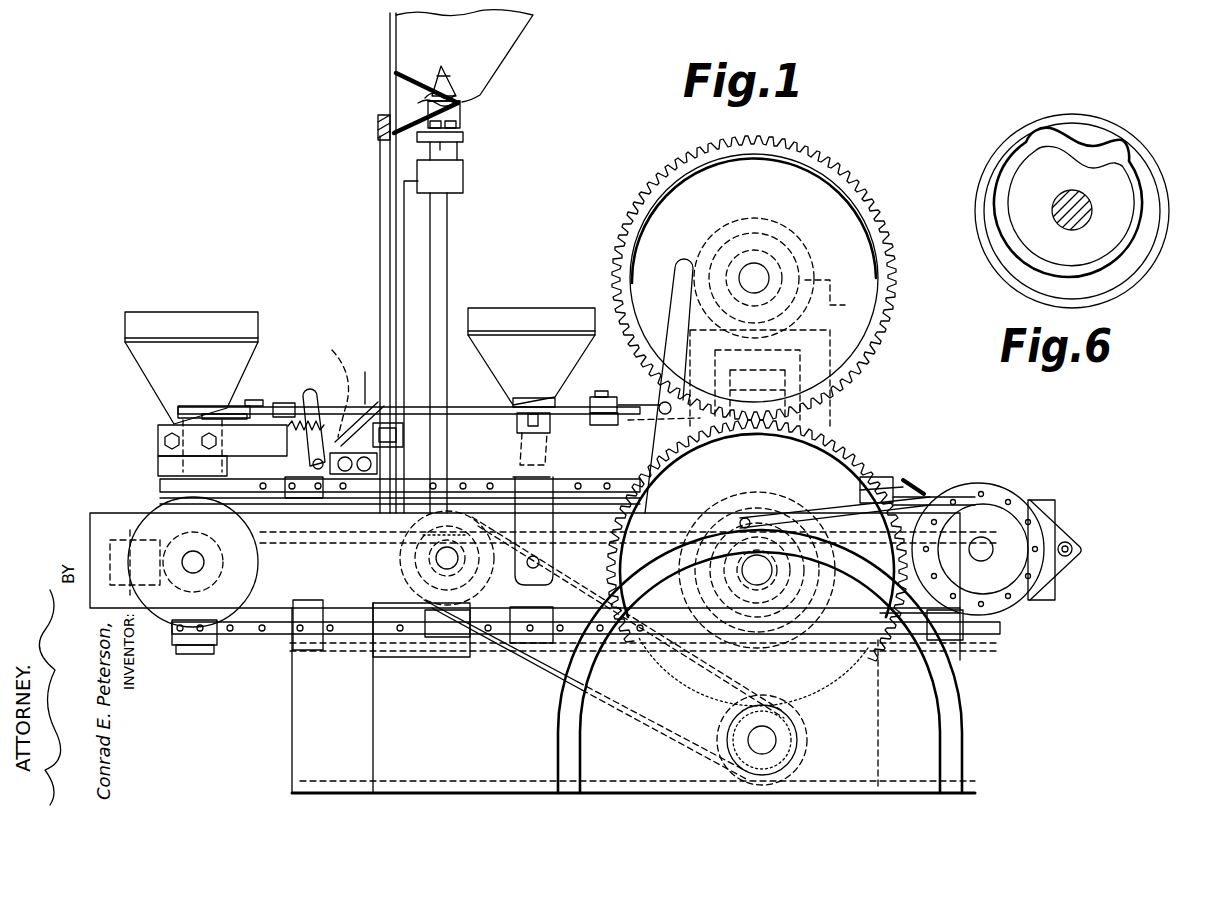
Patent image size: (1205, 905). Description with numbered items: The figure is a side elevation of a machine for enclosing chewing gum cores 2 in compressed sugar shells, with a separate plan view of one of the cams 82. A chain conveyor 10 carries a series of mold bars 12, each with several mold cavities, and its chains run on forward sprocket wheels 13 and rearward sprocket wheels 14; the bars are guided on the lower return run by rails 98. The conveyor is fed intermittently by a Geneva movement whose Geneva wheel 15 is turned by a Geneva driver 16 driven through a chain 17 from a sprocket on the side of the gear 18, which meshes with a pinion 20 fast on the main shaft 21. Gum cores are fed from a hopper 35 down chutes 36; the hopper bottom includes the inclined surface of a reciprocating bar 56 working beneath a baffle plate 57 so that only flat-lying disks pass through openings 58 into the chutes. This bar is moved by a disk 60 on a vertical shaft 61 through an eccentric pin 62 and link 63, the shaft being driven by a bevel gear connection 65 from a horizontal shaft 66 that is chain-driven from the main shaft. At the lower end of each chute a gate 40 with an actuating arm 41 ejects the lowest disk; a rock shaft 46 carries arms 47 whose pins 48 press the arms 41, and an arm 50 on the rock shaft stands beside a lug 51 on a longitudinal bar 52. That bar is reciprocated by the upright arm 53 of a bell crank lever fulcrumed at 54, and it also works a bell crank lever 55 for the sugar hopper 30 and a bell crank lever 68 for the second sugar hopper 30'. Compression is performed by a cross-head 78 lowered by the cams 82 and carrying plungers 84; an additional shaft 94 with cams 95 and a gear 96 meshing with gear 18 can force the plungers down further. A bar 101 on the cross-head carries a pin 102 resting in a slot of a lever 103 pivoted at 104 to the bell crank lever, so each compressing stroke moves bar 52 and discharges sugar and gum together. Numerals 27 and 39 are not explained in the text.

In FIG. 1, the chewing gum core 2 is at (444, 74).
In FIG. 1, the chain conveyor 10 is at (245, 640).
In FIG. 1, the mold bar 12 is at (183, 645).
In FIG. 1, the sprocket wheel 13 is at (862, 456).
In FIG. 1, the sprocket wheel 14 is at (260, 562).
In FIG. 1, the Geneva wheel 15 is at (912, 478).
In FIG. 1, the Geneva driver 16 is at (1056, 534).
In FIG. 1, the chain 17 is at (982, 488).
In FIG. 1, the gear 18 is at (838, 697).
In FIG. 1, the pinion 20 is at (800, 752).
In FIG. 1, the main shaft 21 is at (752, 739).
In FIG. 1, the shaft 27 is at (188, 558).
In FIG. 1, the sugar hopper 30 is at (177, 368).
In FIG. 1, the sugar hopper 30' is at (531, 342).
In FIG. 1, the hopper 35 is at (492, 57).
In FIG. 1, the chute 36 is at (382, 282).
In FIG. 1, the guide rail 39 is at (590, 479).
In FIG. 1, the gate 40 is at (403, 440).
In FIG. 1, the actuating arm 41 is at (329, 382).
In FIG. 1, the rock shaft 46 is at (310, 464).
In FIG. 1, the arm 47 is at (340, 425).
In FIG. 1, the pin 48 is at (365, 372).
In FIG. 1, the arm 50 is at (300, 420).
In FIG. 1, the block or lug 51 is at (283, 403).
In FIG. 1, the bar 52 is at (465, 407).
In FIG. 1, the upright arm of bell crank lever 53 is at (550, 458).
In FIG. 1, the fulcrum 54 is at (527, 620).
In FIG. 1, the bell crank lever 55 is at (208, 407).
In FIG. 1, the reciprocating bar 56 is at (462, 117).
In FIG. 1, the baffle plate 57 is at (410, 95).
In FIG. 1, the opening 58 is at (378, 127).
In FIG. 1, the disk 60 is at (464, 136).
In FIG. 1, the vertical shaft 61 is at (449, 216).
In FIG. 1, the eccentric pin 62 is at (464, 124).
In FIG. 1, the link 63 is at (430, 138).
In FIG. 1, the bevel gear connection 65 is at (398, 556).
In FIG. 1, the horizontal shaft 66 is at (440, 560).
In FIG. 1, the bell crank lever 68 is at (572, 396).
In FIG. 1, the cross-head 78 is at (820, 336).
In FIG. 6, the cam 82 is at (1128, 284).
In FIG. 1, the plunger 84 is at (840, 428).
In FIG. 1, the shaft 94 is at (763, 277).
In FIG. 1, the cam 95 is at (822, 292).
In FIG. 1, the gear 96 is at (653, 190).
In FIG. 1, the rail 98 is at (395, 657).
In FIG. 1, the bar 101 is at (640, 400).
In FIG. 1, the pin 102 is at (660, 419).
In FIG. 1, the lever or link 103 is at (673, 264).
In FIG. 1, the pivot 104 is at (553, 561).